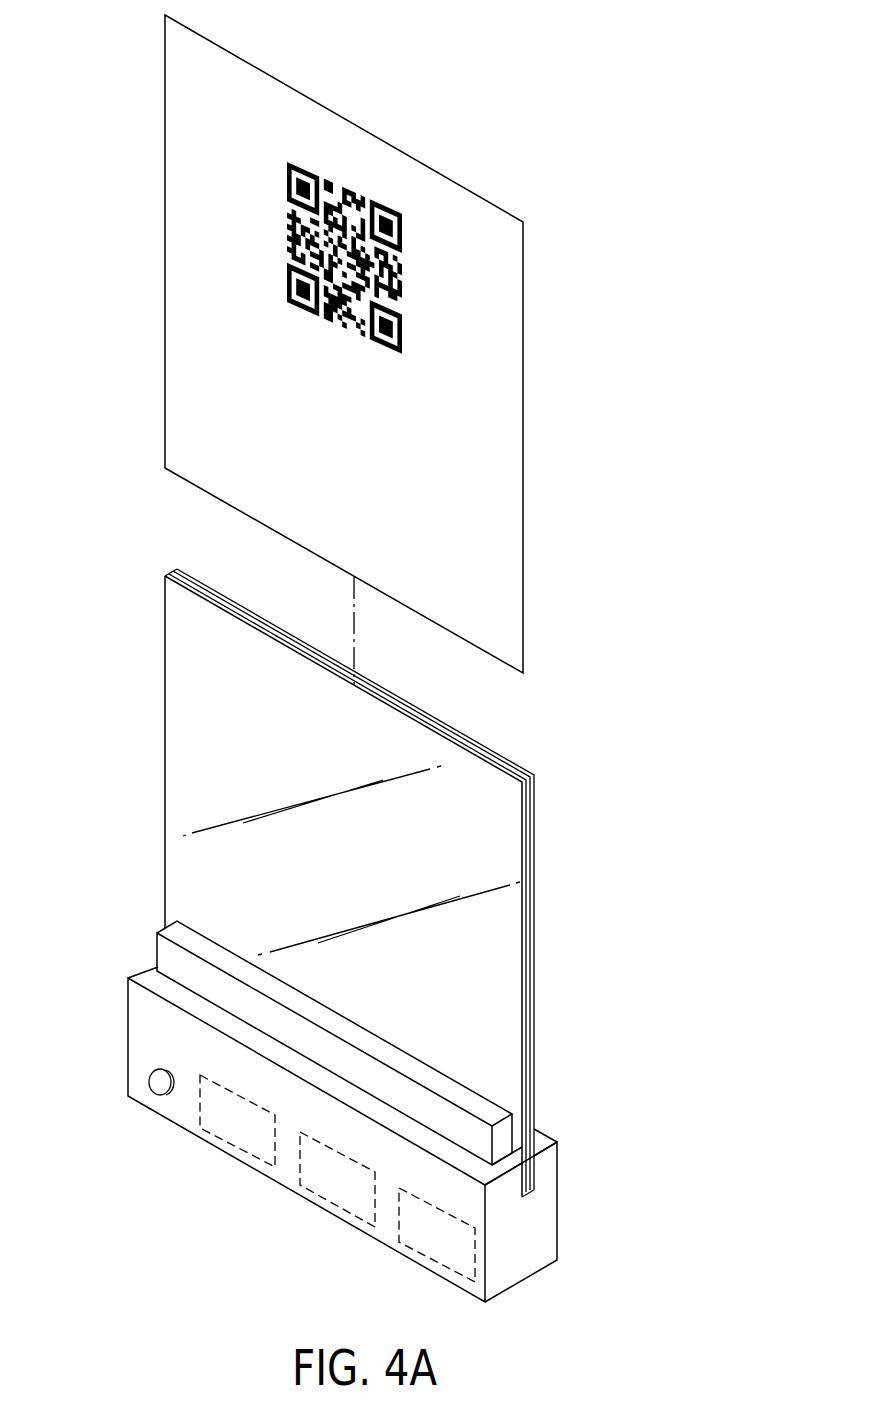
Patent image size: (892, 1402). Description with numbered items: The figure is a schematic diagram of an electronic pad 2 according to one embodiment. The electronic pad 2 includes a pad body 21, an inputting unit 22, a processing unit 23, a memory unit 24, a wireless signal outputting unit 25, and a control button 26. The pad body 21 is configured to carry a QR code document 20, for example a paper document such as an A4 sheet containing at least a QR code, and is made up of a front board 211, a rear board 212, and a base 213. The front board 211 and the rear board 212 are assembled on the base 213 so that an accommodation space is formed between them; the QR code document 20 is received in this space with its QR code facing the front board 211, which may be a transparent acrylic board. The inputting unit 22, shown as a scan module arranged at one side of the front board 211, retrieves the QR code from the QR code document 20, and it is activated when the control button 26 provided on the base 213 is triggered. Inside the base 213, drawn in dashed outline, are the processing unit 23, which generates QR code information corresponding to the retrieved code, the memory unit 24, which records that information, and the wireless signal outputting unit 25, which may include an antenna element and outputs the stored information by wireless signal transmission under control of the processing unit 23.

The electronic pad 2 is at (541, 811).
The QR code document 20 is at (498, 313).
The pad body 21 is at (630, 1008).
The front board 211 is at (523, 1060).
The rear board 212 is at (529, 1100).
The base 213 is at (543, 1172).
The inputting unit 22 is at (173, 963).
The processing unit 23 is at (430, 1245).
The memory unit 24 is at (330, 1187).
The wireless signal outputting unit 25 is at (232, 1130).
The control button 26 is at (160, 1083).